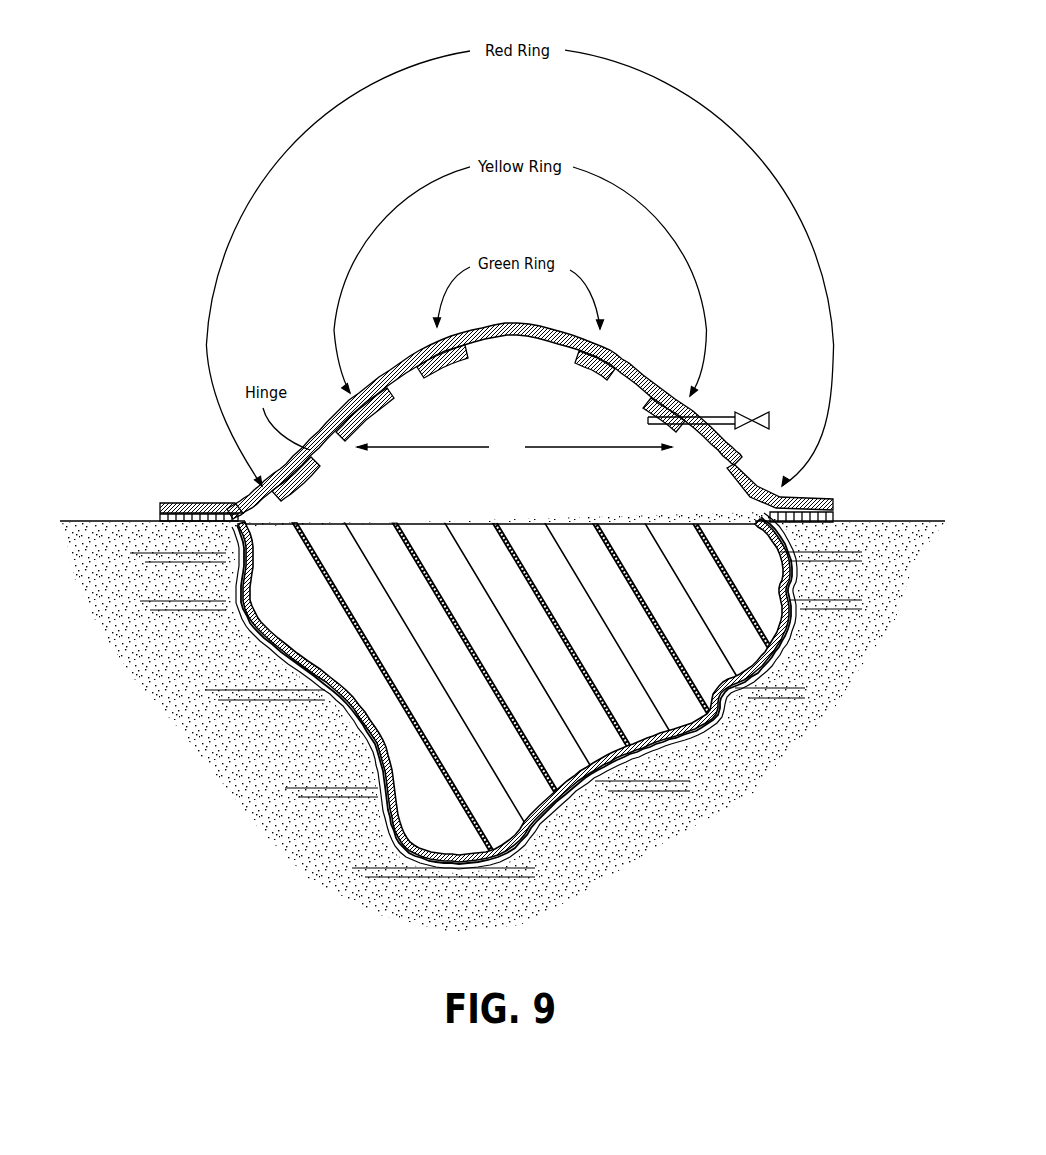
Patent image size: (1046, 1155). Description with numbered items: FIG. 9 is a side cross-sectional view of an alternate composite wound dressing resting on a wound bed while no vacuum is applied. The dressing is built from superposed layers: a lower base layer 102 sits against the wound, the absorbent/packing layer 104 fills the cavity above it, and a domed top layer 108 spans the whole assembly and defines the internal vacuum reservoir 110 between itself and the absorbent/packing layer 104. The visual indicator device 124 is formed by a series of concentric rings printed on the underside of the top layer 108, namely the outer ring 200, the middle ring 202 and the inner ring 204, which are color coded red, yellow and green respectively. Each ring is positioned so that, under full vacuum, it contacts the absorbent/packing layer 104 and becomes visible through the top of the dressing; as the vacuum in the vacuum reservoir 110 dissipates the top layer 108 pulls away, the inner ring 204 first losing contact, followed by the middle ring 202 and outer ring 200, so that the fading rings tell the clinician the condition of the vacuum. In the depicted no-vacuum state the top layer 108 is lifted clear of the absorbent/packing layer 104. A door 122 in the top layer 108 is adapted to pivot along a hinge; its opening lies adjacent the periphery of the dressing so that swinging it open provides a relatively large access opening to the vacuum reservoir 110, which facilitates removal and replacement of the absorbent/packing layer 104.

The base layer 102 is at (417, 862).
The absorbent/packing layer 104 is at (613, 695).
The top layer 108 is at (662, 404).
The vacuum reservoir 110 is at (640, 497).
The door 122 is at (742, 458).
The visual indicator device 124 is at (514, 449).
The outer ring 200 is at (795, 497).
The middle ring 202 is at (340, 416).
The inner ring 204 is at (606, 348).